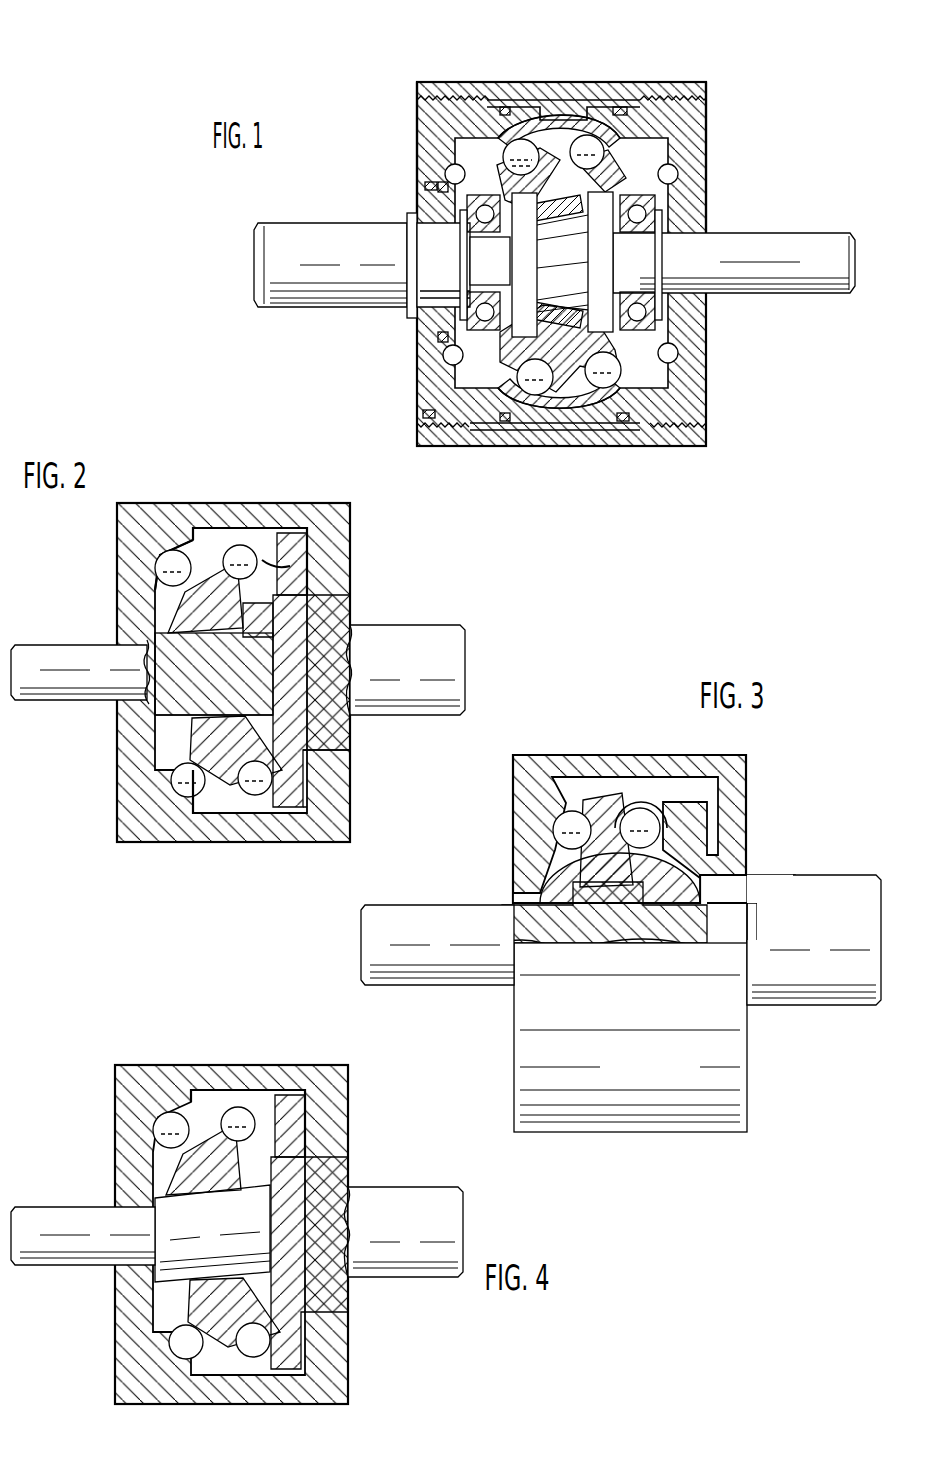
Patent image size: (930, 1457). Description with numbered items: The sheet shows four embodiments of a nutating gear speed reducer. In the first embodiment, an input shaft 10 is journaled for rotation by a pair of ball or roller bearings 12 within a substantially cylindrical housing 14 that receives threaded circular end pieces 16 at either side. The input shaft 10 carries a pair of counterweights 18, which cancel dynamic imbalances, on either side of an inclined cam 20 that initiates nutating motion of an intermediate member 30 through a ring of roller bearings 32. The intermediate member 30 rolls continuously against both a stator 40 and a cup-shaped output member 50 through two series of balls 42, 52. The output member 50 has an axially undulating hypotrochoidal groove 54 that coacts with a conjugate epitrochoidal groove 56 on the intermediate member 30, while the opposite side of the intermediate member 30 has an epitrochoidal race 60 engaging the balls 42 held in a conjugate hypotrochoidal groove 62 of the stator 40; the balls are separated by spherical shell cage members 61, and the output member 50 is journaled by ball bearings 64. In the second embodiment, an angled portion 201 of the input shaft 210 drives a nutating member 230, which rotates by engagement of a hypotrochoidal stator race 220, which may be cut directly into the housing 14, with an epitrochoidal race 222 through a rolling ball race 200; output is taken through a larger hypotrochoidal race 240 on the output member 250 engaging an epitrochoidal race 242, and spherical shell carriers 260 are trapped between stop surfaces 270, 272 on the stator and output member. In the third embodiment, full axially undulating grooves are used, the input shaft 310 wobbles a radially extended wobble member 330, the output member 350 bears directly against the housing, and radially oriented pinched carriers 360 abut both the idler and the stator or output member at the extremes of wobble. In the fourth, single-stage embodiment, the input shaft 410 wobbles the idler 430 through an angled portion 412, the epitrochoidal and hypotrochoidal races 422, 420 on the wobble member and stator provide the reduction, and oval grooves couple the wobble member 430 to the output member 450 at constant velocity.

In FIG. 1, the input shaft 10 is at (800, 245).
In FIG. 1, the ball or roller bearings 12 is at (412, 322).
In FIG. 1, the housing 14 is at (586, 84).
In FIG. 2, the housing 14 is at (251, 503).
In FIG. 3, the housing 14 is at (650, 755).
In FIG. 4, the housing 14 is at (253, 1065).
In FIG. 1, the end pieces 16 is at (432, 124).
In FIG. 1, the counterweights 18 is at (584, 248).
In FIG. 1, the inclined cam 20 is at (577, 270).
In FIG. 1, the intermediate member 30 is at (570, 385).
In FIG. 1, the ring of roller bearings 32 is at (545, 212).
In FIG. 1, the stator 40 is at (690, 212).
In FIG. 1, the balls 42 is at (598, 140).
In FIG. 1, the output member 50 is at (445, 207).
In FIG. 1, the balls 52 is at (504, 107).
In FIG. 1, the hypotrochoidal groove 54 is at (530, 140).
In FIG. 1, the epitrochoidal groove 56 is at (543, 396).
In FIG. 1, the epitrochoidal ball race 60 is at (594, 390).
In FIG. 1, the ball cage 61 is at (430, 395).
In FIG. 1, the hypotrochoidal groove 62 is at (623, 405).
In FIG. 1, the ball bearings 64 is at (432, 352).
In FIG. 2, the rolling ball race 200 is at (158, 556).
In FIG. 2, the angled portion 201 is at (165, 722).
In FIG. 2, the input shaft 210 is at (118, 680).
In FIG. 2, the hypotrochoidal ball race 220 is at (196, 538).
In FIG. 2, the epitrochoidal ball race 222 is at (156, 568).
In FIG. 2, the nutating member 230 is at (185, 588).
In FIG. 2, the hypotrochoidal ball race 240 is at (252, 548).
In FIG. 2, the epitrochoidal race 242 is at (300, 760).
In FIG. 2, the output member 250 is at (330, 625).
In FIG. 2, the spherical shell carrier members 260 is at (180, 800).
In FIG. 2, the stop surface 270 is at (168, 778).
In FIG. 2, the stop surface 272 is at (300, 590).
In FIG. 3, the input shaft 310 is at (478, 903).
In FIG. 3, the wobble member 330 is at (600, 798).
In FIG. 3, the output member 350 is at (736, 900).
In FIG. 3, the radially oriented carriers 360 is at (660, 803).
In FIG. 4, the input shaft 410 is at (115, 1245).
In FIG. 4, the angled portion 412 is at (211, 1222).
In FIG. 4, the hypotrochoidal race 420 is at (194, 1100).
In FIG. 4, the epitrochoidal race 422 is at (154, 1130).
In FIG. 4, the wobble member 430 is at (183, 1150).
In FIG. 4, the output member 450 is at (318, 1185).